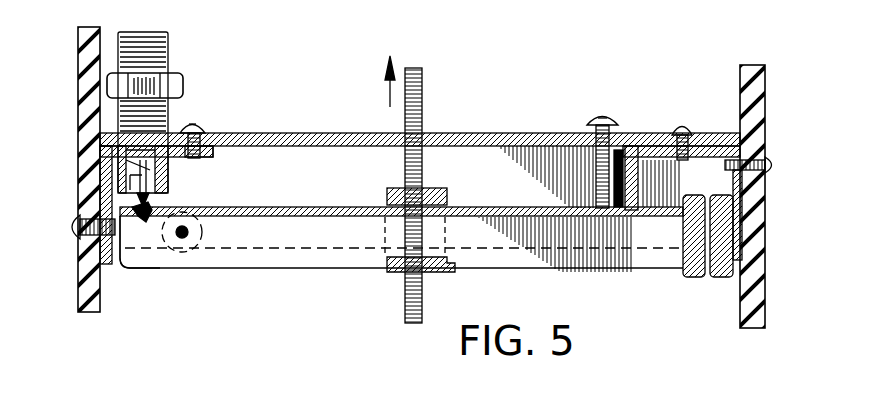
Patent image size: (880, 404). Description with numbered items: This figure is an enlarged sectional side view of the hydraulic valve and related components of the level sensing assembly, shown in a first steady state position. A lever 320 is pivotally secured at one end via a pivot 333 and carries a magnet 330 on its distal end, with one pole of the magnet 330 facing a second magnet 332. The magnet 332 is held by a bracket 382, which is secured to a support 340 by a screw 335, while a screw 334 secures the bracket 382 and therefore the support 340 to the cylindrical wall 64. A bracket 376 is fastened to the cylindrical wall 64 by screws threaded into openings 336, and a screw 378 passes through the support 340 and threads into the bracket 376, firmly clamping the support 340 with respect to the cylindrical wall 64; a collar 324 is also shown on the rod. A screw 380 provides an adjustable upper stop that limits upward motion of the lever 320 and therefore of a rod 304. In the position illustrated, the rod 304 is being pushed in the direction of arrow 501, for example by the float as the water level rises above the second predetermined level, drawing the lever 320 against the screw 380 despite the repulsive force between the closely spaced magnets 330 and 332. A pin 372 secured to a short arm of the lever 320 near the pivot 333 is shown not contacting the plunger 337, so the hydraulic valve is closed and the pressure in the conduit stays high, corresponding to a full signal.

The cylindrical wall 64 is at (78, 80).
The rod 304 is at (423, 100).
The lever 320 is at (327, 239).
The clamp collar 324 is at (447, 192).
The magnet 330 is at (686, 278).
The magnet 332 is at (723, 278).
The pivot 333 is at (192, 236).
The screw 334 is at (770, 170).
The screw 335 is at (690, 127).
The openings 336 is at (72, 235).
The plunger 337 is at (150, 198).
The support 340 is at (292, 133).
The pin 372 is at (136, 228).
The bracket 376 is at (210, 155).
The screw 378 is at (207, 125).
The screw 380 is at (170, 62).
The bracket 382 is at (652, 158).
The direction arrow 501 is at (387, 100).